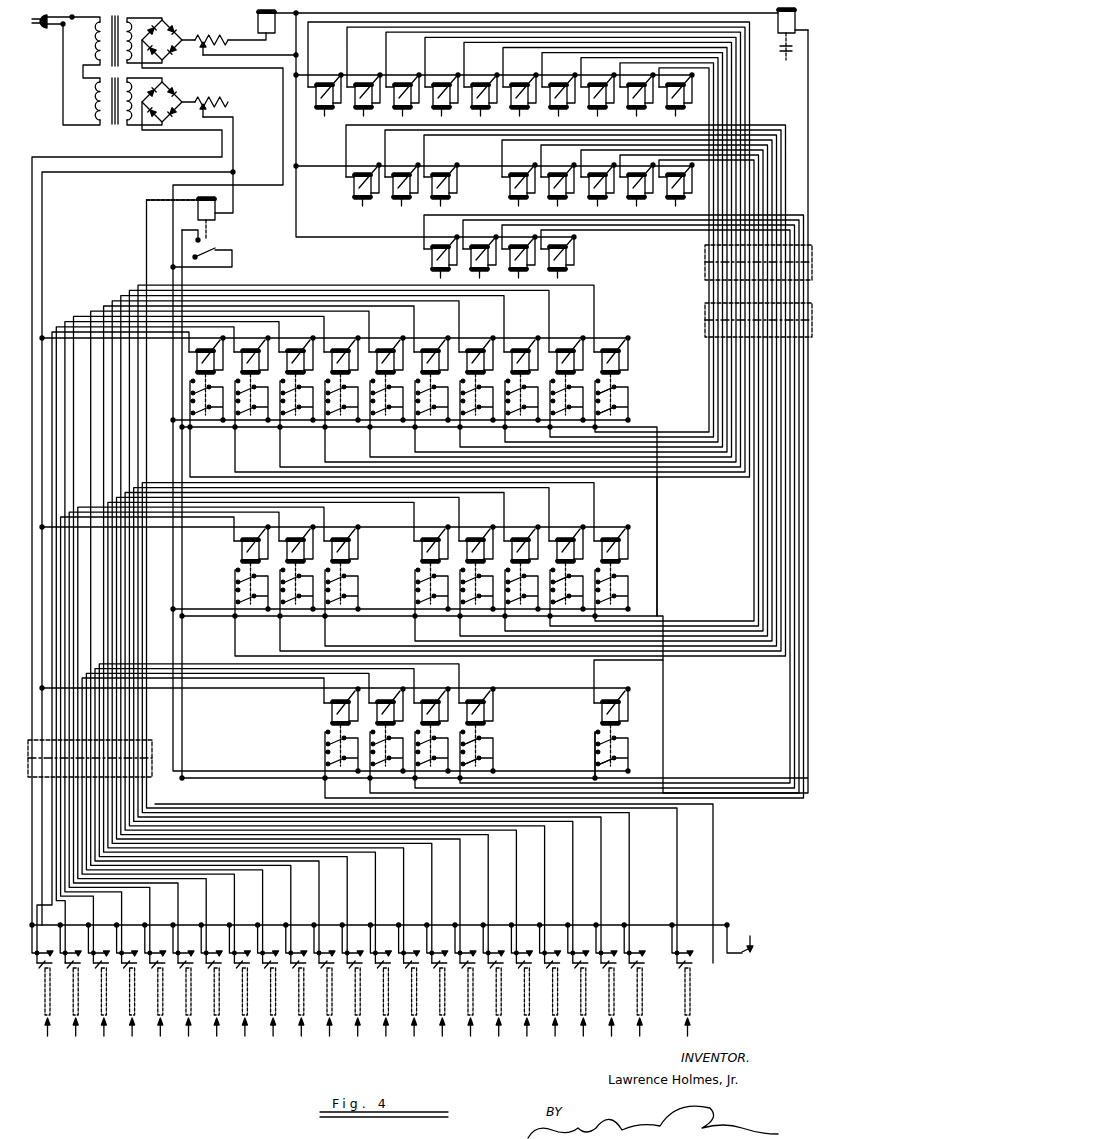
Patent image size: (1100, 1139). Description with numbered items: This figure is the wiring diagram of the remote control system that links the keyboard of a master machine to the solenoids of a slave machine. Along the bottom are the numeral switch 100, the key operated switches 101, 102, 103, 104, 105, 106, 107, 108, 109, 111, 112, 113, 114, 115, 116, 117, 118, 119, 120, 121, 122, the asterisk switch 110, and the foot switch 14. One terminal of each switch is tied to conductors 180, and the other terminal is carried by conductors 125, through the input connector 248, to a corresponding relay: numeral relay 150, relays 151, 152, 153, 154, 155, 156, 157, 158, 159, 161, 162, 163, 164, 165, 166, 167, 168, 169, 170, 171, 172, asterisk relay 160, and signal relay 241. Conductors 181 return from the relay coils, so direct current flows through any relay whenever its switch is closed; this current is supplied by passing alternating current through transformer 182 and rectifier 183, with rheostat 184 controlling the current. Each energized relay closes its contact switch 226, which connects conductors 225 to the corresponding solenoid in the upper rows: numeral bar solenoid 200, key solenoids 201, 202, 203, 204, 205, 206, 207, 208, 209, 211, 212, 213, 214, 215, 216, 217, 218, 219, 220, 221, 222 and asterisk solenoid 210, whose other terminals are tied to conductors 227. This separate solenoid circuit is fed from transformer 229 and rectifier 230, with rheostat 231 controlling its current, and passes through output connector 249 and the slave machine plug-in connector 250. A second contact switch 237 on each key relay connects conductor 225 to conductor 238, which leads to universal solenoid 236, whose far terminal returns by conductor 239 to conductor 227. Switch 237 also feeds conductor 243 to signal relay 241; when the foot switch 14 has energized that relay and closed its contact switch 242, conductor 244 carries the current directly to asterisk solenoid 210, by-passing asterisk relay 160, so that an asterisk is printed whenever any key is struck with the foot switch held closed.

The foot switch 14 is at (753, 960).
The numeral switch 100 is at (674, 979).
The key operated switch 101 is at (38, 979).
The key operated switch 102 is at (67, 979).
The key operated switch 103 is at (95, 979).
The key operated switch 104 is at (124, 979).
The key operated switch 105 is at (152, 979).
The key operated switch 106 is at (180, 979).
The key operated switch 107 is at (208, 979).
The key operated switch 108 is at (236, 979).
The key operated switch 109 is at (265, 979).
The asterisk switch 110 is at (293, 979).
The key operated switch 111 is at (322, 979).
The key operated switch 112 is at (349, 979).
The key operated switch 113 is at (377, 979).
The key operated switch 114 is at (406, 979).
The key operated switch 115 is at (434, 979).
The key operated switch 116 is at (462, 979).
The key operated switch 117 is at (491, 979).
The key operated switch 118 is at (518, 979).
The key operated switch 119 is at (547, 979).
The key operated switch 120 is at (575, 979).
The key operated switch 121 is at (603, 979).
The key operated switch 122 is at (631, 979).
The conductors 125 is at (150, 790).
The numeral relay 150 is at (217, 216).
The relay 151 is at (206, 375).
The relay 152 is at (251, 375).
The relay 153 is at (251, 564).
The relay 154 is at (296, 375).
The relay 155 is at (296, 564).
The relay 156 is at (341, 375).
The relay 157 is at (341, 564).
The relay 158 is at (341, 726).
The relay 159 is at (386, 726).
The asterisk relay 160 is at (386, 375).
The relay 161 is at (431, 726).
The relay 162 is at (476, 726).
The relay 163 is at (431, 375).
The relay 164 is at (431, 564).
The relay 165 is at (476, 375).
The relay 166 is at (476, 564).
The relay 167 is at (521, 375).
The relay 168 is at (521, 564).
The relay 169 is at (566, 375).
The relay 170 is at (566, 564).
The relay 171 is at (611, 375).
The relay 172 is at (611, 564).
The conductors 180 is at (222, 143).
The conductors 181 is at (235, 142).
The transformer 182 is at (118, 130).
The rectifier 183 is at (184, 90).
The rheostat 184 is at (226, 114).
The numeral bar solenoid 200 is at (257, 19).
The key solenoid 201 is at (325, 87).
The key solenoid 202 is at (364, 87).
The key solenoid 203 is at (363, 177).
The key solenoid 204 is at (403, 87).
The key solenoid 205 is at (402, 177).
The key solenoid 206 is at (442, 87).
The key solenoid 207 is at (441, 177).
The key solenoid 208 is at (441, 249).
The key solenoid 209 is at (480, 249).
The asterisk solenoid 210 is at (481, 87).
The key solenoid 211 is at (519, 249).
The key solenoid 212 is at (565, 256).
The key solenoid 213 is at (520, 87).
The key solenoid 214 is at (519, 177).
The key solenoid 215 is at (559, 87).
The key solenoid 216 is at (558, 177).
The key solenoid 217 is at (598, 87).
The key solenoid 218 is at (598, 177).
The key solenoid 219 is at (637, 87).
The key solenoid 220 is at (637, 177).
The key solenoid 221 is at (680, 97).
The key solenoid 222 is at (680, 187).
The conductors 225 is at (267, 186).
The contact switch 226 is at (620, 384).
The conductors 227 is at (279, 56).
The transformer 229 is at (83, 66).
The rectifier 230 is at (184, 31).
The rheostat 231 is at (227, 48).
The universal solenoid 236 is at (793, 58).
The relay contact switch 237 is at (620, 407).
The conductor 238 is at (805, 101).
The conductor 239 is at (768, 25).
The signal relay 241 is at (611, 726).
The signal relay contact switch 242 is at (614, 763).
The conductor 243 is at (576, 770).
The conductor 244 is at (658, 523).
The input connector 248 is at (154, 758).
The output connector 249 is at (704, 323).
The input plug-in connector 250 is at (704, 267).